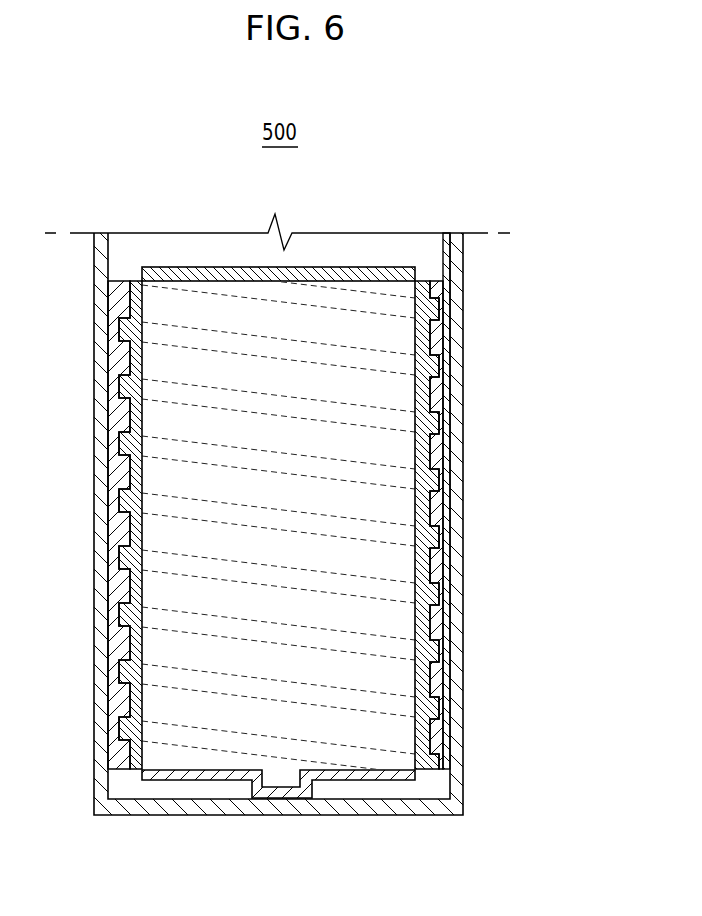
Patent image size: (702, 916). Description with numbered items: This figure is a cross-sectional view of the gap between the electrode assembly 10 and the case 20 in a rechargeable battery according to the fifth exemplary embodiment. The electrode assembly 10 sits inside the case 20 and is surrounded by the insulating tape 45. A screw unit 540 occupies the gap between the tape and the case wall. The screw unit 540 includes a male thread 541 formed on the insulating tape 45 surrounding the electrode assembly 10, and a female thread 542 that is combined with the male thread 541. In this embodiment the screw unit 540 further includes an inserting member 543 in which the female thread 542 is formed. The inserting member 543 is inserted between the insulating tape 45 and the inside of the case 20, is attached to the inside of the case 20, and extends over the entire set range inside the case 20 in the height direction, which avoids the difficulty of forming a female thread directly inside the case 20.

The electrode assembly 10 is at (407, 620).
The case 20 is at (457, 675).
The insulating tape 45 is at (431, 561).
The screw unit 540 is at (346, 501).
The male thread 541 is at (432, 432).
The female thread 542 is at (441, 360).
The inserting member 543 is at (442, 452).